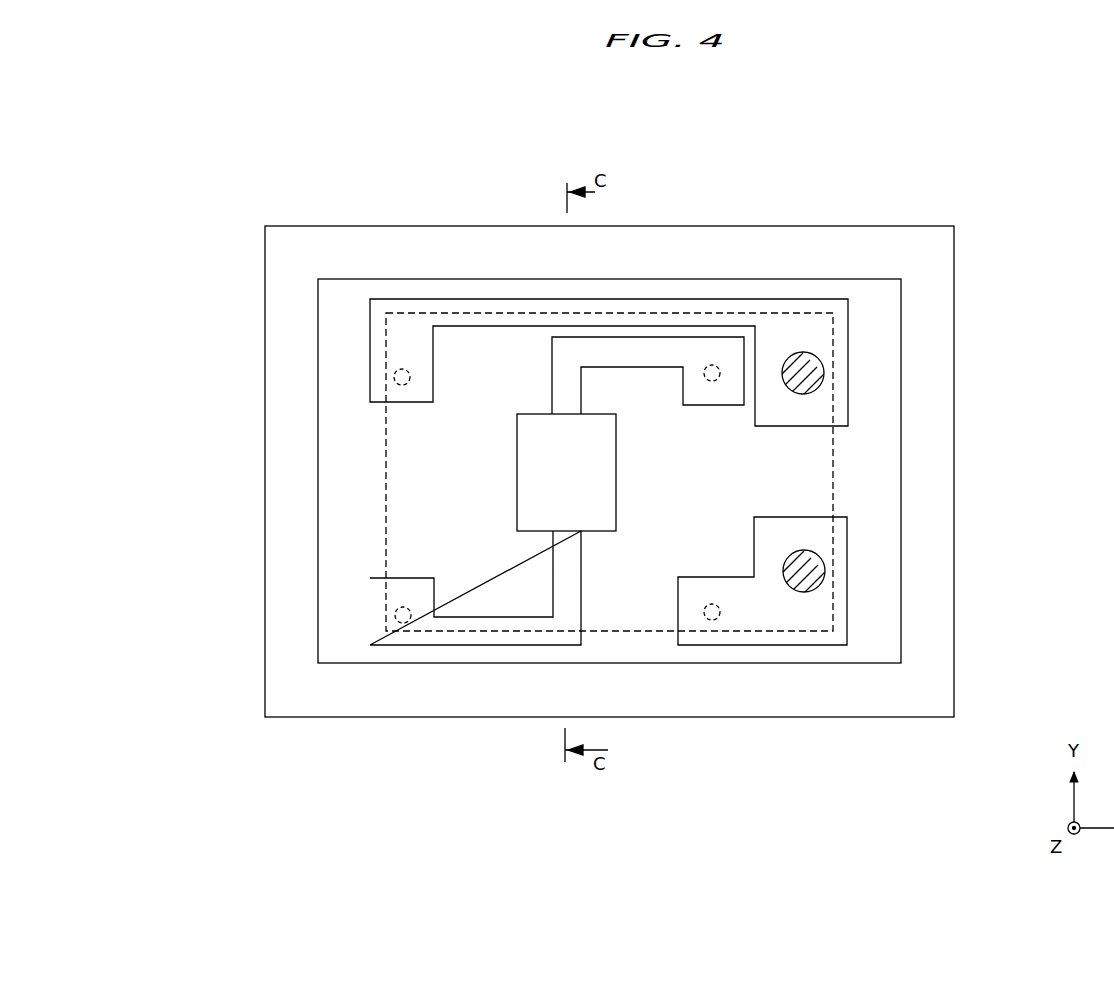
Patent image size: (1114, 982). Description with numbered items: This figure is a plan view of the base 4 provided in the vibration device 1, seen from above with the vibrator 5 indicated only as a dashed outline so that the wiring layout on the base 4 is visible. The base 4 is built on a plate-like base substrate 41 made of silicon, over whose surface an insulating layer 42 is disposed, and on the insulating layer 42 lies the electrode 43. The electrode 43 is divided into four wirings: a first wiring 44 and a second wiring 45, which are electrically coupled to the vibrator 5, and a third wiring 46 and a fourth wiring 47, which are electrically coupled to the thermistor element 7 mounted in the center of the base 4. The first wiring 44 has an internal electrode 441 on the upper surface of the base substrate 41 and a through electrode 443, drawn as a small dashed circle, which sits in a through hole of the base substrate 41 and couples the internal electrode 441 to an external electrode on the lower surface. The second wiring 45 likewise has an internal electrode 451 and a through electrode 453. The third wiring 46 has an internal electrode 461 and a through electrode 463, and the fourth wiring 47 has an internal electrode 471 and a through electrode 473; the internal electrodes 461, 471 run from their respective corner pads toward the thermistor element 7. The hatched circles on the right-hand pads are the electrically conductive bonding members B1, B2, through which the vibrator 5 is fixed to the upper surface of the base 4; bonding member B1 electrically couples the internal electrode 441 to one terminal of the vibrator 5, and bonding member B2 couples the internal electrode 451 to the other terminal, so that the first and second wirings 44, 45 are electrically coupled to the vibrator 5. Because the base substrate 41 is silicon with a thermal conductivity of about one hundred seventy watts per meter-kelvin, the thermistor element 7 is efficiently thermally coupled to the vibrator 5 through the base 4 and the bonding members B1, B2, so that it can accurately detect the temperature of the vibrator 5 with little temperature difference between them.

The vibration device 1 is at (960, 139).
The base 4 is at (579, 428).
The base substrate 41 is at (283, 320).
The insulating layer 42 is at (345, 425).
The electrode 43 is at (595, 459).
The first wiring 44 is at (779, 297).
The internal electrode 441 is at (824, 345).
The through electrode 443 is at (395, 378).
The second wiring 45 is at (783, 650).
The internal electrode 451 is at (822, 530).
The through electrode 453 is at (712, 647).
The third wiring 46 is at (368, 609).
The internal electrode 461 is at (478, 647).
The through electrode 463 is at (403, 647).
The fourth wiring 47 is at (666, 324).
The internal electrode 471 is at (570, 384).
The through electrode 473 is at (712, 364).
The vibrator 5 is at (840, 463).
The thermistor element 7 is at (560, 475).
The electrically conductive bonding member B1 is at (816, 373).
The electrically conductive bonding member B2 is at (826, 565).